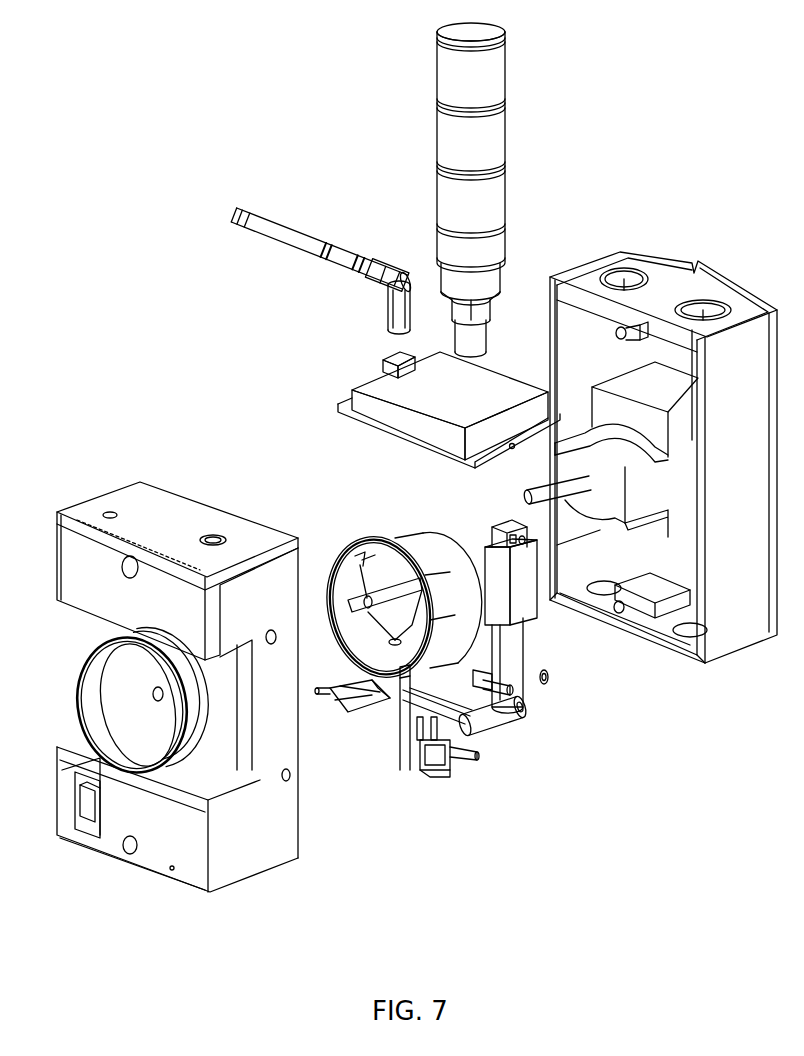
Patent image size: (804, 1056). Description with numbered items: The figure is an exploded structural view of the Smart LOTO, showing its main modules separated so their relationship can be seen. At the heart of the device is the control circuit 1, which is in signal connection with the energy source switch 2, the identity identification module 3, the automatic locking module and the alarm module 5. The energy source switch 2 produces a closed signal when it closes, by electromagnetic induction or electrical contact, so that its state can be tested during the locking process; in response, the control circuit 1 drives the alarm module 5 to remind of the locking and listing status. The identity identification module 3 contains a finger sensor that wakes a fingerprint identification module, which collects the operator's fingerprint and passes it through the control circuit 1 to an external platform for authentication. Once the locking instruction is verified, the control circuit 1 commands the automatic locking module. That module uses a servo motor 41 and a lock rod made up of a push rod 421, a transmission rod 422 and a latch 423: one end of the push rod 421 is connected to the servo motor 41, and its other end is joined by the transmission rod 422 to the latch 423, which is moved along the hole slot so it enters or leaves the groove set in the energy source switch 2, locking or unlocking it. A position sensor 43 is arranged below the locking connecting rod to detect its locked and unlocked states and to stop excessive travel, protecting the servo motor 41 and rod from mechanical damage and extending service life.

The control circuit 1 is at (340, 372).
The energy source switch 2 is at (360, 543).
The identity identification module 3 is at (95, 822).
The alarm module 5 is at (488, 201).
The servo motor 41 is at (530, 600).
The push rod 421 is at (548, 683).
The transmission rod 422 is at (480, 725).
The latch 423 is at (407, 693).
The position sensor 43 is at (447, 760).